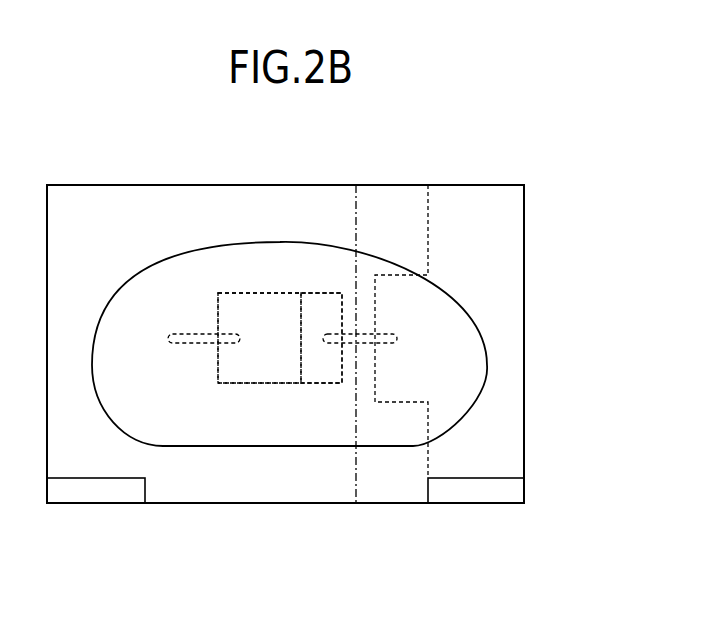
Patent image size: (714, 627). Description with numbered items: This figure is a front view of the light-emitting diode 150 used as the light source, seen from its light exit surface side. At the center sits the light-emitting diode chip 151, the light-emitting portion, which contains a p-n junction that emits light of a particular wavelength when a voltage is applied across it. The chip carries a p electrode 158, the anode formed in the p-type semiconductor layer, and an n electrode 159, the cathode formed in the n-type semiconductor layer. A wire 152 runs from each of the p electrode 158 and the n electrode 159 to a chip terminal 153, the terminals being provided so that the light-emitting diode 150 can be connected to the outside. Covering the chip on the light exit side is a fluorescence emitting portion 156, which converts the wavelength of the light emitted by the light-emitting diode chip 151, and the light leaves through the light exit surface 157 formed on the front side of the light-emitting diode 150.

The light-emitting diode 150 is at (288, 503).
The light-emitting diode chip 151 is at (278, 303).
The wire 152 is at (197, 343).
The chip terminal 153 is at (127, 490).
The fluorescence emitting portion 156 is at (180, 278).
The light exit surface 157 is at (423, 360).
The p electrode 158 is at (328, 307).
The n electrode 159 is at (232, 317).